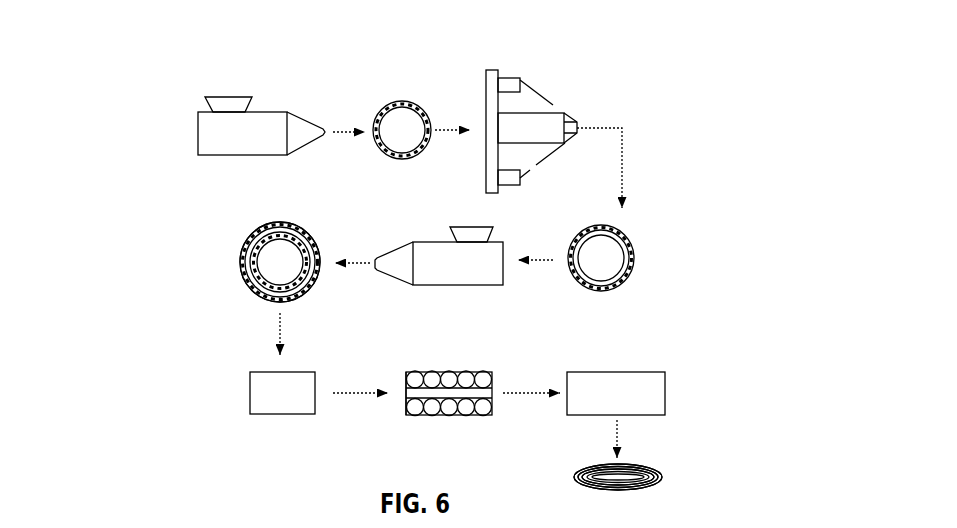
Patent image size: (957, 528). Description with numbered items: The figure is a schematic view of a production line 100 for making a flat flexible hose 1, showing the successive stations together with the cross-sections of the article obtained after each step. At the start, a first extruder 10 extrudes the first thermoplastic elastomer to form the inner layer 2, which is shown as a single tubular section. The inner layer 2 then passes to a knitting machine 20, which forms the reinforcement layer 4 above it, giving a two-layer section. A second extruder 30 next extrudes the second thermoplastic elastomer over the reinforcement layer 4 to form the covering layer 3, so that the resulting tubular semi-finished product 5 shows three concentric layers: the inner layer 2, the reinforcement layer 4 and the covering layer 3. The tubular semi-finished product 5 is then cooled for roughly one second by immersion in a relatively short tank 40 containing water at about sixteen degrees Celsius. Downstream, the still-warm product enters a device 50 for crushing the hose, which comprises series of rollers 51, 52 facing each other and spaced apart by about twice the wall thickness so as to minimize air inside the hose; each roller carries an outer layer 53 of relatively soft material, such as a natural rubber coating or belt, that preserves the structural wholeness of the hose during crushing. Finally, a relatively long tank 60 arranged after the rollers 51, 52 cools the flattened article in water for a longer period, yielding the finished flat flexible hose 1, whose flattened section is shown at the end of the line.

The production line 100 is at (148, 107).
The first extruder 10 is at (262, 127).
The inner layer 2 is at (397, 101).
The knitting machine 20 is at (540, 105).
The reinforcement layer 4 is at (620, 228).
The second extruder 30 is at (446, 258).
The tubular semi-finished product 5 is at (233, 243).
The covering layer 3 is at (248, 280).
The tank 40 is at (258, 386).
The device for crushing the hose 50 is at (473, 395).
The rollers 51 is at (487, 375).
The rollers 52 is at (406, 414).
The outer layer 53 is at (466, 404).
The tank 60 is at (646, 378).
The flat flexible hose 1 is at (568, 472).